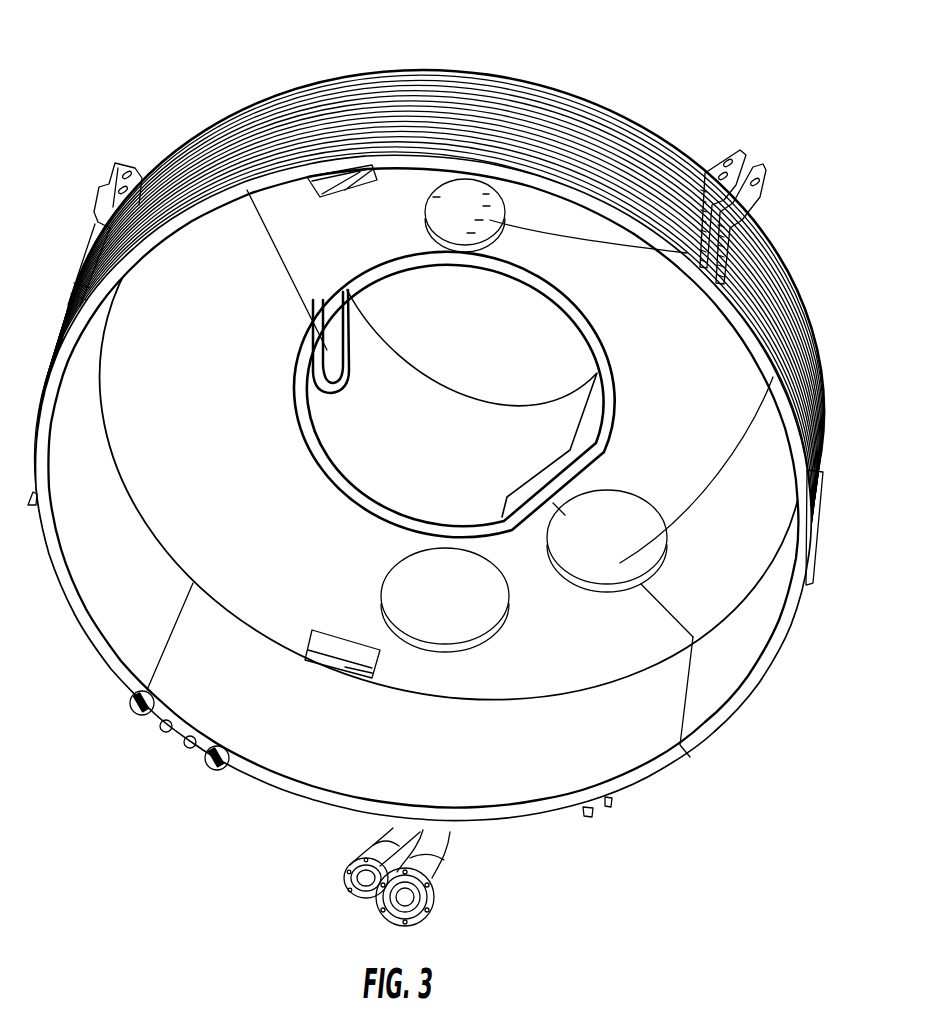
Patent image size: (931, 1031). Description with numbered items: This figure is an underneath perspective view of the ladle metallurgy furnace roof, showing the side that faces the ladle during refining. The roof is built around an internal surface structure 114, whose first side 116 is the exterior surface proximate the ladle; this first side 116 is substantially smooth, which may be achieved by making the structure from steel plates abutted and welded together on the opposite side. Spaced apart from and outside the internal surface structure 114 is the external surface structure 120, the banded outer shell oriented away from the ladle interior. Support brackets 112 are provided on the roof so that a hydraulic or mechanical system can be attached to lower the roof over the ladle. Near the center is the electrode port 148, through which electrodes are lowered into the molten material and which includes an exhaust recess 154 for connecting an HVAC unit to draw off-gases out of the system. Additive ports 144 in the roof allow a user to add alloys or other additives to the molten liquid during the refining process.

The support brackets 112 is at (748, 182).
The internal surface structure 114 is at (543, 670).
The internal surface structure first side 116 is at (643, 725).
The external surface structure 120 is at (577, 133).
The additive ports 144 is at (453, 583).
The electrode port 148 is at (394, 419).
The exhaust recess 154 is at (323, 353).